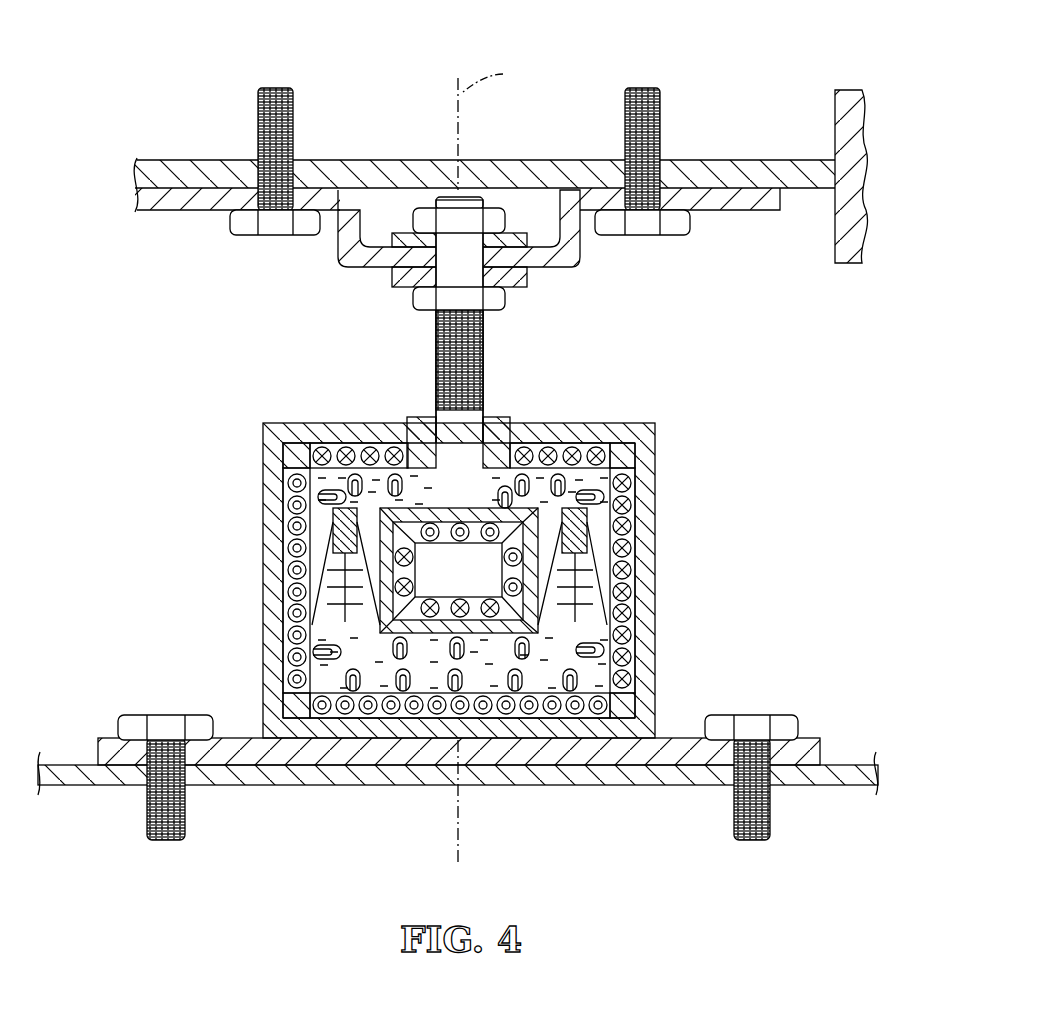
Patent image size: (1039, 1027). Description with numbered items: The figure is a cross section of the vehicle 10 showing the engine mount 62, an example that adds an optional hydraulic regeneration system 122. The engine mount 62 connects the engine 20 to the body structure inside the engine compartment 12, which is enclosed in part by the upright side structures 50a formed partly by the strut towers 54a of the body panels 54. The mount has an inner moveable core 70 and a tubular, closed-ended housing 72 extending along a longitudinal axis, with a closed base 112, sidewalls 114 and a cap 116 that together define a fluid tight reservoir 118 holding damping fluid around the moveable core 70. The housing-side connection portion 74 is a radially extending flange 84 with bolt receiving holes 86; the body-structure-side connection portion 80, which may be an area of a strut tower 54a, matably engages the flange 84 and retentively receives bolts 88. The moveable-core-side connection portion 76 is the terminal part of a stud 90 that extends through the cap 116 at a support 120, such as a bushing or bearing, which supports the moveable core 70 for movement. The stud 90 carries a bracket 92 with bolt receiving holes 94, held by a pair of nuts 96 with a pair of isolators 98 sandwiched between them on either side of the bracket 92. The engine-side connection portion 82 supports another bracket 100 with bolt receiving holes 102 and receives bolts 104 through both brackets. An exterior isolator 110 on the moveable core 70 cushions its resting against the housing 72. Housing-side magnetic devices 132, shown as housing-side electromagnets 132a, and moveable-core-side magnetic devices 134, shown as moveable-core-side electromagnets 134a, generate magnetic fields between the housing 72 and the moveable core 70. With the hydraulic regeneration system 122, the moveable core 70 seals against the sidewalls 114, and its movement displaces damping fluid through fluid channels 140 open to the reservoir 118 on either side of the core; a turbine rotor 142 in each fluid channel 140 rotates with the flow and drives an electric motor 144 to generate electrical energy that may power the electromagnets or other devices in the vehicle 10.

The vehicle 10 is at (478, 445).
The engine compartment 12 is at (478, 445).
The engine 20 is at (846, 88).
The upright side structure 50a is at (458, 813).
The body panel 54 is at (458, 813).
The strut tower 54a is at (627, 787).
The engine mount 62 is at (452, 592).
The moveable core 70 is at (375, 570).
The housing 72 is at (262, 505).
The housing-side connection portion 74 is at (459, 714).
The moveable-core-side connection portion 76 is at (511, 353).
The body-structure-side connection portion 80 is at (458, 813).
The engine-side connection portion 82 is at (847, 146).
The flange 84 is at (689, 738).
The bolt receiving hole 86 is at (778, 752).
The bolt 88 is at (518, 767).
The stud 90 is at (483, 343).
The bracket 92 is at (580, 242).
The bolt receiving hole 94 is at (539, 162).
The nut 96 is at (413, 298).
The isolator 98 is at (527, 274).
The bracket 100 is at (708, 160).
The bolt receiving hole 102 is at (663, 177).
The bolt 104 is at (539, 162).
The isolator 110 is at (360, 600).
The base 112 is at (690, 737).
The sidewall 114 is at (655, 492).
The cap 116 is at (632, 422).
The reservoir 118 is at (460, 582).
The support 120 is at (491, 417).
The hydraulic regeneration system 122 is at (592, 527).
The housing-side magnetic device 132 is at (452, 595).
The housing-side electromagnet 132a is at (386, 446).
The moveable-core-side magnetic device 134 is at (458, 570).
The moveable-core-side electromagnet 134a is at (494, 580).
The fluid channel 140 is at (588, 599).
The turbine rotor 142 is at (600, 578).
The electric motor 144 is at (600, 553).